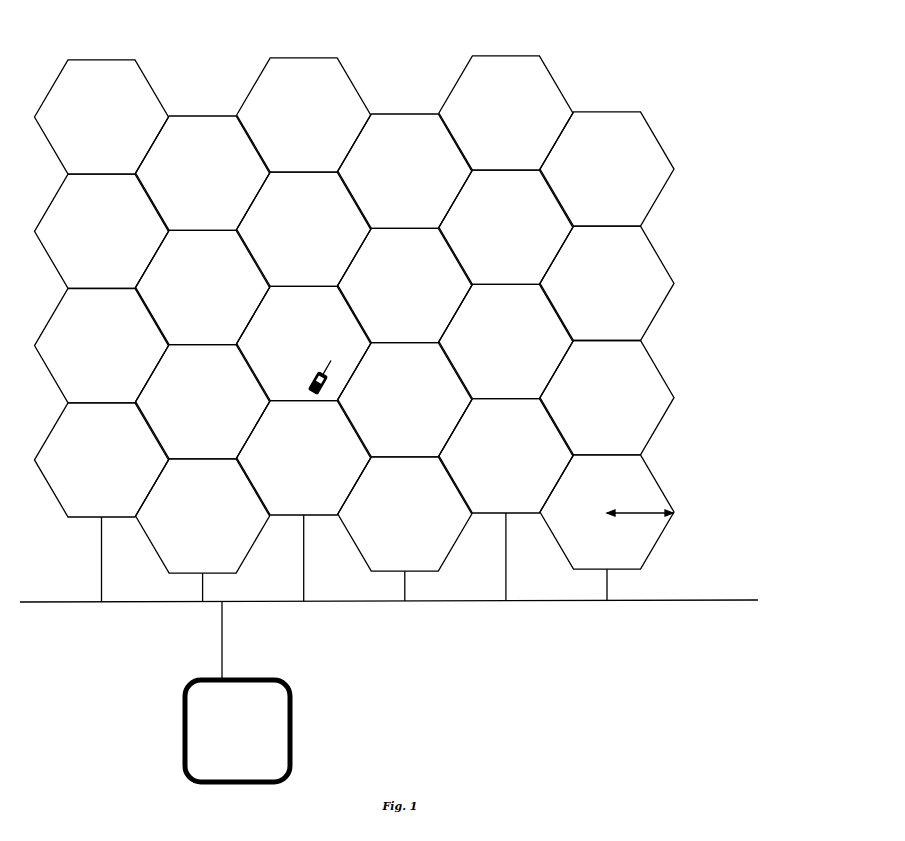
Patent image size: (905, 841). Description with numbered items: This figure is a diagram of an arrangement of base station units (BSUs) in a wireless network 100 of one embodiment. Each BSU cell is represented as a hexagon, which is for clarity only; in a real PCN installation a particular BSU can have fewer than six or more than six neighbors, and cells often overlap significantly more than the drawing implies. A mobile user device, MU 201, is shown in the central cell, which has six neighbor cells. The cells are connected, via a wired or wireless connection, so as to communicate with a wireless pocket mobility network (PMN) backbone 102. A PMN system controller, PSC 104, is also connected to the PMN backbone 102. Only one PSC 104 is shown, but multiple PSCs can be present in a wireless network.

The wireless network 100 is at (625, 81).
The PMN backbone 102 is at (639, 601).
The PSC 104 is at (290, 738).
The MU 201 is at (309, 383).